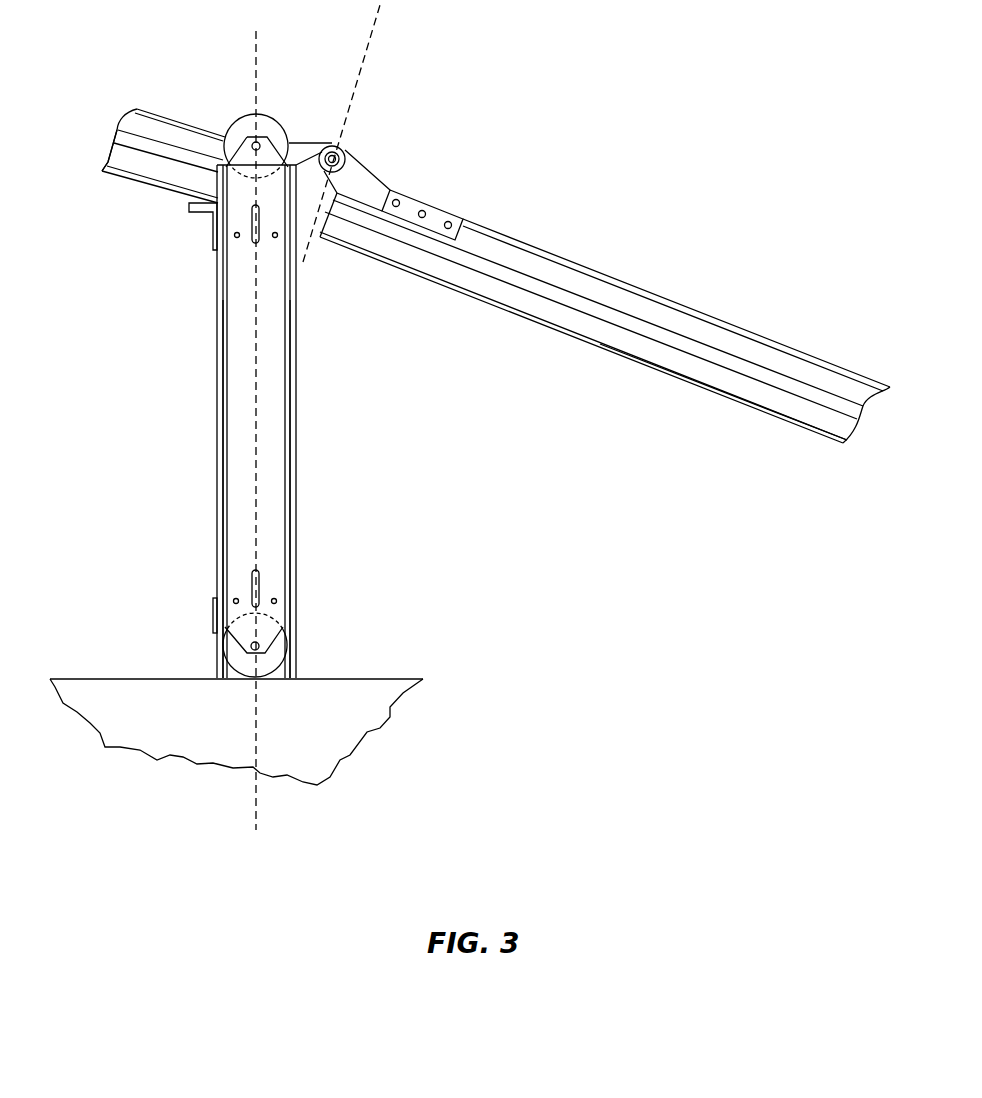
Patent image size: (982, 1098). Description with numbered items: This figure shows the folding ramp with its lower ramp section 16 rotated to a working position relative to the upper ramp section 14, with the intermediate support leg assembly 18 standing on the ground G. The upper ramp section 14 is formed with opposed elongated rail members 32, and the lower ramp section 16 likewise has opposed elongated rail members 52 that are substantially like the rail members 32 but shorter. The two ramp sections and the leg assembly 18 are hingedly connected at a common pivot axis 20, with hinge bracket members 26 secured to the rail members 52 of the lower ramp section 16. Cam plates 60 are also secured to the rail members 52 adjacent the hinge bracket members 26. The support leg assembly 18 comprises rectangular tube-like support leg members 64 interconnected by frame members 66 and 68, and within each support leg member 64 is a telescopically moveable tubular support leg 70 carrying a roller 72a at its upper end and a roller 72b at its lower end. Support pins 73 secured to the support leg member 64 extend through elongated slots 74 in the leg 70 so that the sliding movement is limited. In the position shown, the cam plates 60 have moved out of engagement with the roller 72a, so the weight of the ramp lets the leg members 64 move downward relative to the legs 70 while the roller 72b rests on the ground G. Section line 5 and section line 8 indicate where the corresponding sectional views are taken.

The section line 5- 5 is at (256, 31).
The section line 8- 8 is at (380, 4).
The upper ramp section 14 is at (178, 196).
The lower ramp section 16 is at (536, 321).
The intermediate support leg assembly 18 is at (215, 392).
The common pivot axis 20 is at (338, 150).
The hinge bracket members 26 is at (385, 182).
The rail members 32 is at (110, 174).
The rail members 52 is at (687, 386).
The cam plates 60 is at (438, 212).
The support leg members 64 is at (217, 513).
The frame member 66 is at (214, 615).
The frame member 68 is at (212, 223).
The telescopically moveable tubular support leg 70 is at (285, 470).
The roller 72a is at (248, 113).
The roller 72b is at (220, 675).
The support pins 73 is at (272, 242).
The elongated slots 74 is at (255, 232).
The ground G is at (397, 677).